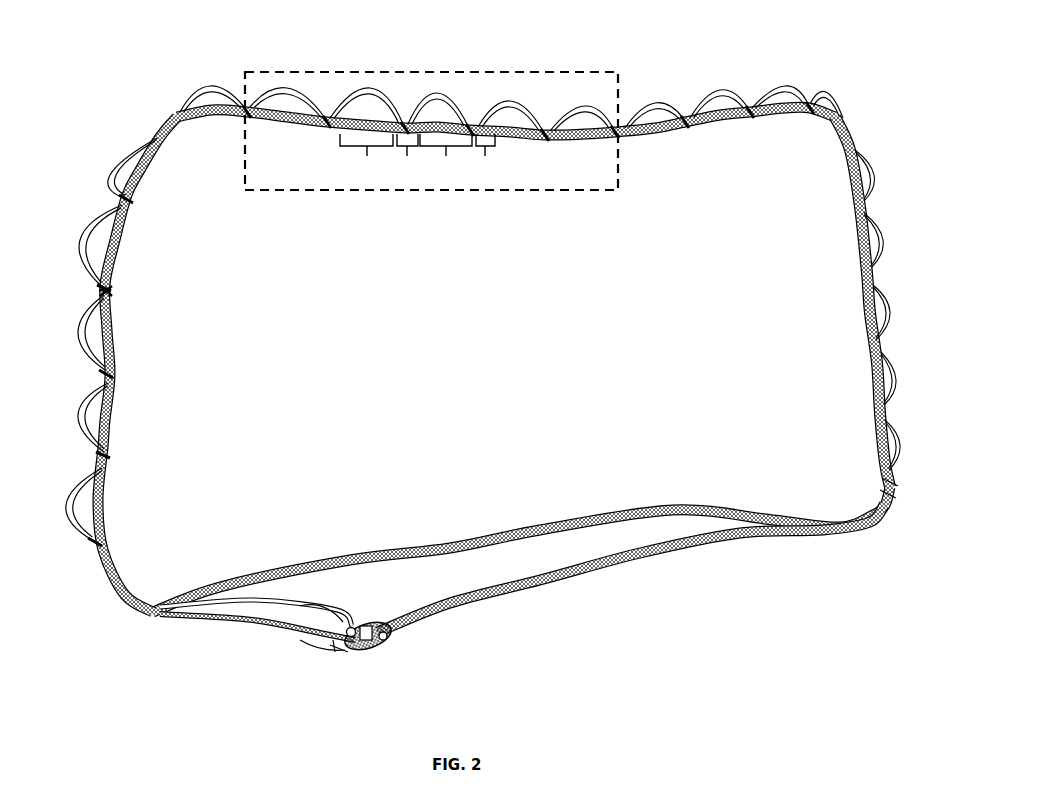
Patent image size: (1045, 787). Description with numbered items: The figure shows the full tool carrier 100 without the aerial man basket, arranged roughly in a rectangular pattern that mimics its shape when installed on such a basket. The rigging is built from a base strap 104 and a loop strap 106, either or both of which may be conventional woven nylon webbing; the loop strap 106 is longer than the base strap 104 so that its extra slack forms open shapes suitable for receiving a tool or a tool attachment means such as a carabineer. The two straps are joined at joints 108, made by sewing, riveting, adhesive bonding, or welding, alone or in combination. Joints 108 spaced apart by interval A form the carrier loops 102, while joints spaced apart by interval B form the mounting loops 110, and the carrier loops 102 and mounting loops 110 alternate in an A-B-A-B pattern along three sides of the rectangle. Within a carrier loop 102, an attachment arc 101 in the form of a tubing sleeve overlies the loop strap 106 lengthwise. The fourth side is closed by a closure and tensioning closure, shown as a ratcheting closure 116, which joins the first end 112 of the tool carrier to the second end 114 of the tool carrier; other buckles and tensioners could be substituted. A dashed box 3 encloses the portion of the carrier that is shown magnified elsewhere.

The tool carrier 100 is at (779, 578).
The attachment arc 101 is at (708, 100).
The carrier loops 102 is at (875, 156).
The base strap 104 is at (870, 420).
The loop strap 106 is at (103, 572).
The joints 108 is at (113, 385).
The mounting loops 110 is at (107, 293).
The first end of the tool carrier 112 is at (343, 622).
The second end of the tool carrier 114 is at (397, 623).
The ratcheting closure 116 is at (390, 660).
The dashed box 3 is at (567, 190).
The interval A is at (406, 157).
The interval B is at (446, 157).